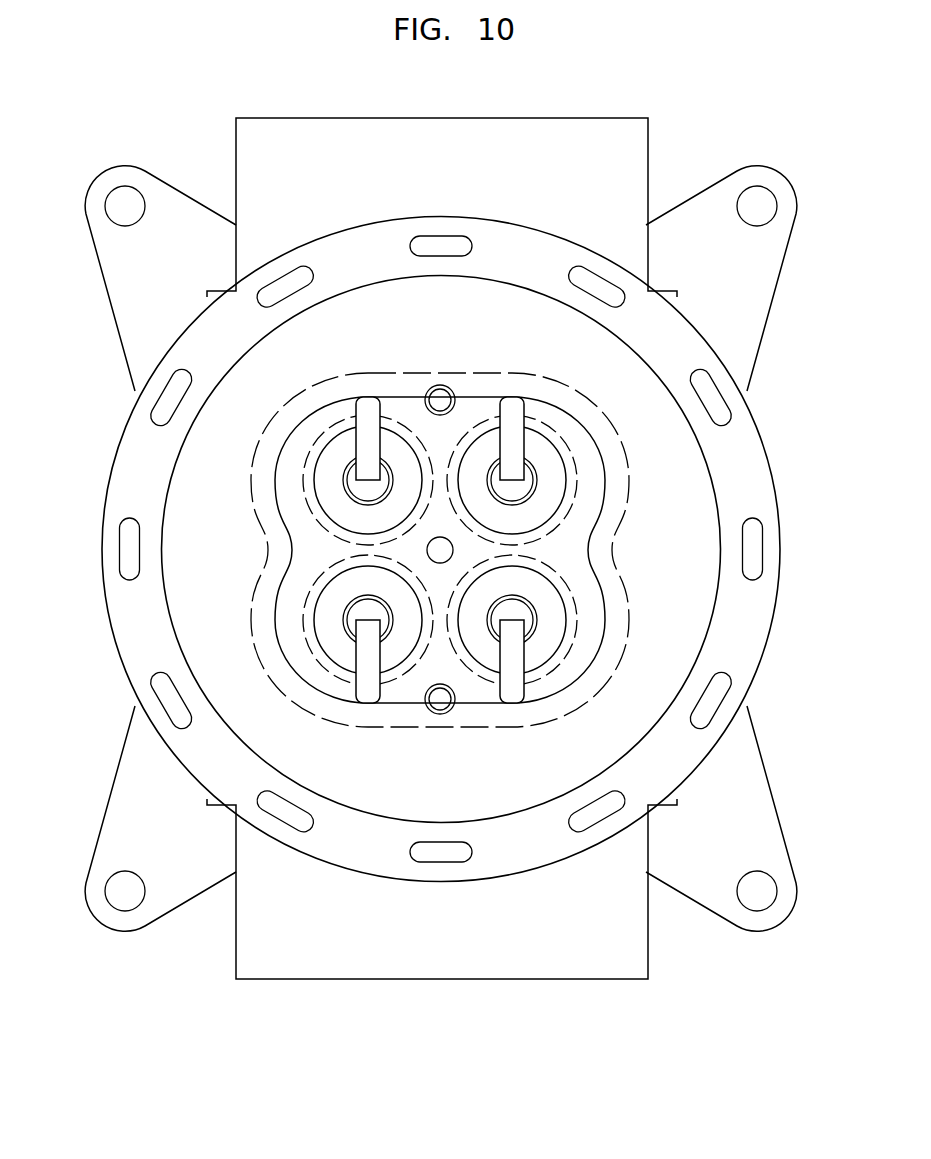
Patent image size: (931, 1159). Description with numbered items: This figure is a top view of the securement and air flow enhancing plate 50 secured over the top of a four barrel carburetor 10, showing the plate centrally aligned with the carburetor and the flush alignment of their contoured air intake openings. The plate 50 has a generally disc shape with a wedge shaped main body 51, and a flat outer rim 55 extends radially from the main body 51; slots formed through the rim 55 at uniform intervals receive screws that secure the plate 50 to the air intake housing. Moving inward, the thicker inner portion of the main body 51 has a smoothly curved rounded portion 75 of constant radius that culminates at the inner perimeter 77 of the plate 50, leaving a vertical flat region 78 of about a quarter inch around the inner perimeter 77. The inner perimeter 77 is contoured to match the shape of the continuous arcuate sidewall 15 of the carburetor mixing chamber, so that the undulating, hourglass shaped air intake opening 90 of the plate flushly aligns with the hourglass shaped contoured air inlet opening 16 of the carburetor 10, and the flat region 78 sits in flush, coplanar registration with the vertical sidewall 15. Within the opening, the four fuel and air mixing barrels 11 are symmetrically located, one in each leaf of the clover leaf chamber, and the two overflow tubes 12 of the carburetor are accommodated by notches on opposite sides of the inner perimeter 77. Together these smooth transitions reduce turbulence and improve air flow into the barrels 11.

The securement and air flow enhancing plate 50 is at (100, 447).
The main body 51 is at (178, 521).
The flat outer rim 55 is at (130, 625).
The rounded portion 75 is at (265, 600).
The carburetor 10 is at (398, 407).
The inner perimeter 77 is at (612, 548).
The vertical flat region 78 is at (603, 495).
The fuel and air mixing barrel 11 is at (538, 480).
The sidewall or throat 15 is at (591, 441).
The overflow tube 12 is at (462, 402).
The contoured air inlet opening 16 is at (547, 560).
The arcuate air intake opening 90 is at (303, 565).